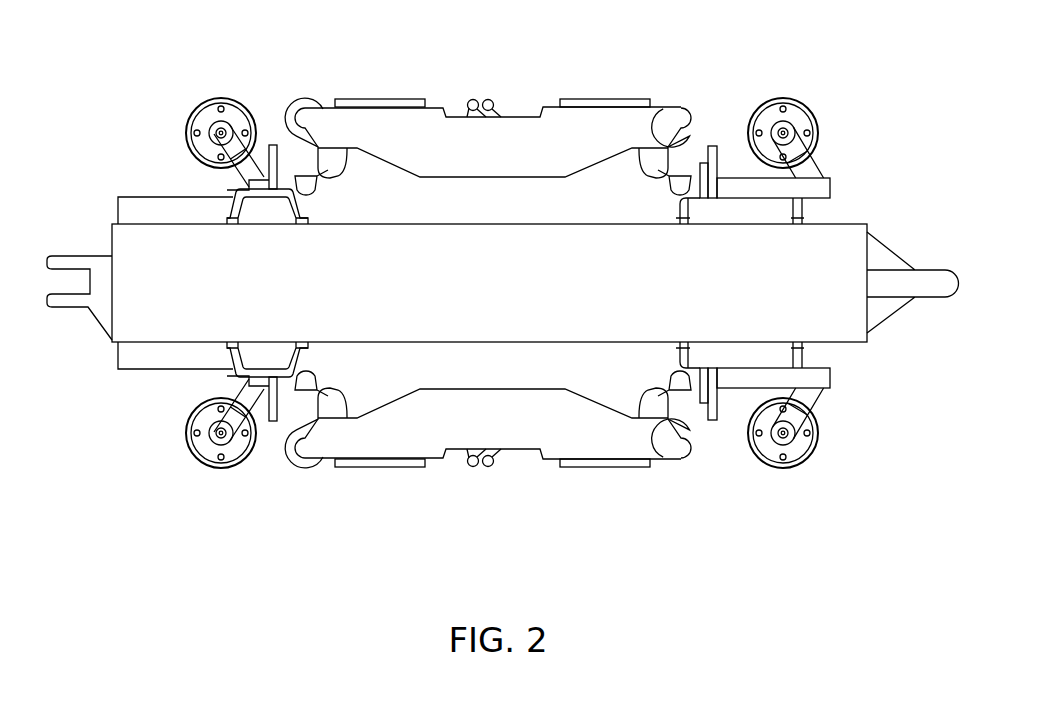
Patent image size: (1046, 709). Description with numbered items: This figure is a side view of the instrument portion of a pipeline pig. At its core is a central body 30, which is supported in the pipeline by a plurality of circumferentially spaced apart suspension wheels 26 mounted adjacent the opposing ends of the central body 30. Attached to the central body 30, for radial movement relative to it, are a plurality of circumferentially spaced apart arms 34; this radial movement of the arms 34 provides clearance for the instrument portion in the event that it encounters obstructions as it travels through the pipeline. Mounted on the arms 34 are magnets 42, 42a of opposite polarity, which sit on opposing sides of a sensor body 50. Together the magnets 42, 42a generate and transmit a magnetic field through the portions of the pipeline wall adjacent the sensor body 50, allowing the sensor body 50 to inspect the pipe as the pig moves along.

The suspension wheels 26 is at (221, 98).
The central body 30 is at (600, 318).
The arms 34 is at (616, 120).
The magnet 42 is at (383, 99).
The magnet 42a is at (573, 99).
The sensor body 50 is at (476, 98).